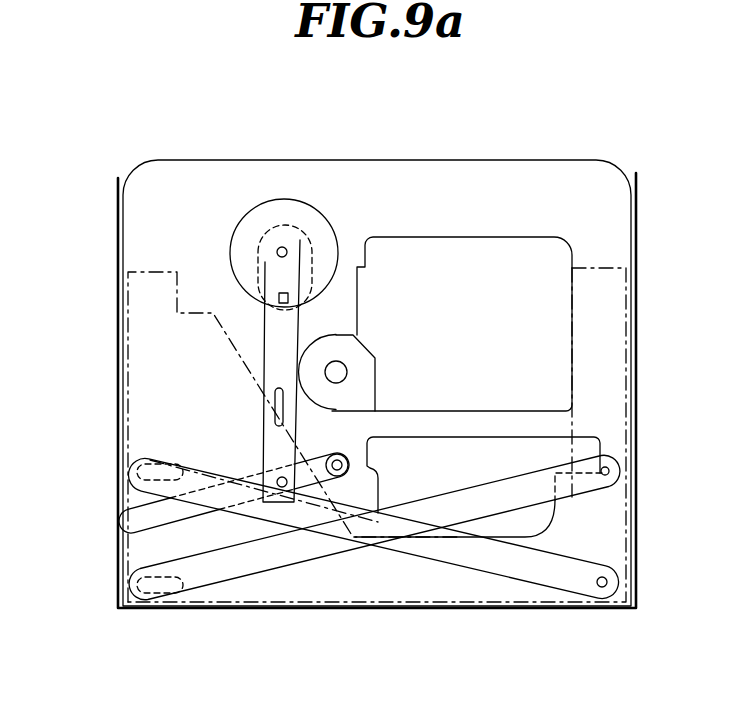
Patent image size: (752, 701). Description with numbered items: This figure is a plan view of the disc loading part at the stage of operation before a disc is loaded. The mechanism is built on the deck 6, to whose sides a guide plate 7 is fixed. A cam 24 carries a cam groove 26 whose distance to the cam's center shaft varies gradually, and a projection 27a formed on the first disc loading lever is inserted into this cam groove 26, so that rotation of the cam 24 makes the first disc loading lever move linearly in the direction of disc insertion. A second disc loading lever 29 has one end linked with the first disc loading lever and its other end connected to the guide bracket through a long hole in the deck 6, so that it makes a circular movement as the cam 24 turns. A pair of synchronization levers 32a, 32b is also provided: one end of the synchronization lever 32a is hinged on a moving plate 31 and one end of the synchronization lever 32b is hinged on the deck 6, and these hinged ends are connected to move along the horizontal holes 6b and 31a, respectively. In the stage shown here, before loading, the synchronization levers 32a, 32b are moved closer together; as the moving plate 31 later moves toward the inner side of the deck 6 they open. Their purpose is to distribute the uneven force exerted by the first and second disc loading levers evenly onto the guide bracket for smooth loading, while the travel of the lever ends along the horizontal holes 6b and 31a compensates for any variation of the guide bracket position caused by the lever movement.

The deck 6 is at (580, 172).
The guide plate 7 is at (637, 225).
The moving plate 31 is at (618, 322).
The horizontal hole 31a is at (150, 460).
The cam 24 is at (327, 223).
The cam groove 26 is at (298, 295).
The projection 27a is at (262, 285).
The second disc loading lever 29 is at (195, 515).
The synchronization lever 32a is at (300, 553).
The synchronization lever 32b is at (467, 565).
The horizontal hole 6b is at (160, 597).